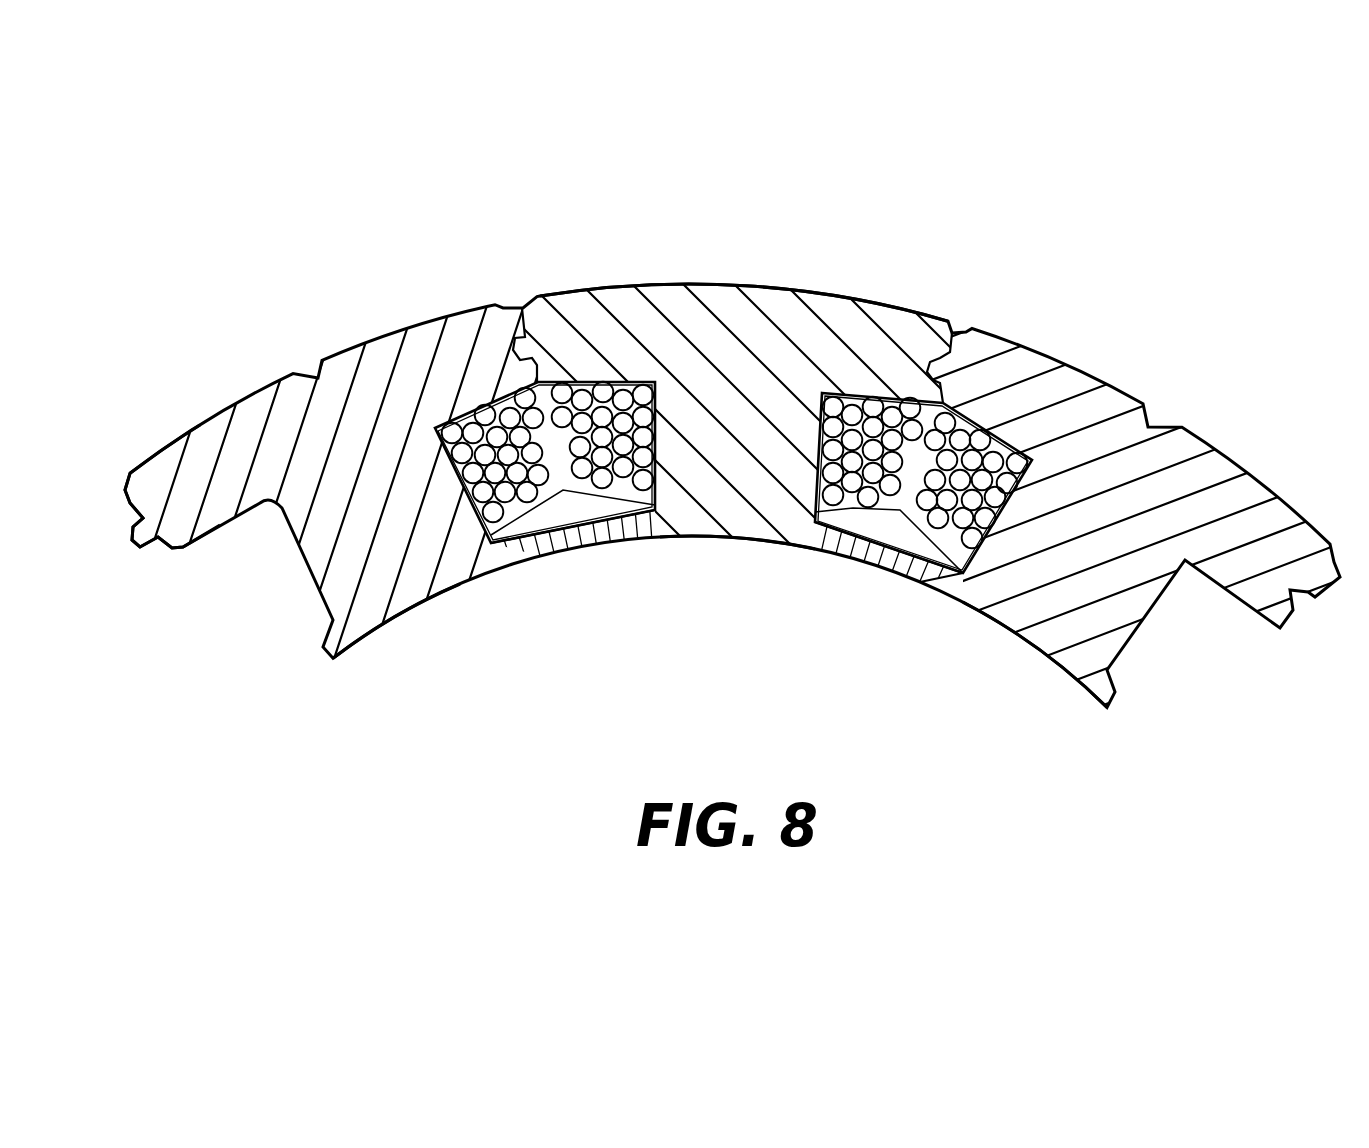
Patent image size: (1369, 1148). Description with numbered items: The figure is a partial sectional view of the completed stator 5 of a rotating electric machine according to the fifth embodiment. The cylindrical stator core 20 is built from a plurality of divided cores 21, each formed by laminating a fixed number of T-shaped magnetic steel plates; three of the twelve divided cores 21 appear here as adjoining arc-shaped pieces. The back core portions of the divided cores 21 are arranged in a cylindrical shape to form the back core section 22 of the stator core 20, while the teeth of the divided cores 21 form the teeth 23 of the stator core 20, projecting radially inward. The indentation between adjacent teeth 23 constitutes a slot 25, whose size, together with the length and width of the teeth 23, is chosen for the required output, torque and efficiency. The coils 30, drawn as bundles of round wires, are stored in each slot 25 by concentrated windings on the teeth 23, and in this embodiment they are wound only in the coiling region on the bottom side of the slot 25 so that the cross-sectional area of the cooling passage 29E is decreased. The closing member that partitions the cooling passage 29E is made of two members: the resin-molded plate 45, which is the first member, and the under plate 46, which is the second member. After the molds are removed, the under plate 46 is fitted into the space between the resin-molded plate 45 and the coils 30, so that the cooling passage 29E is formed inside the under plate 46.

The stator 5 is at (862, 290).
The stator core 20 is at (707, 282).
The divided core 21 is at (257, 388).
The back core section 22 is at (182, 457).
The teeth 23 is at (407, 583).
The slot 25 is at (488, 415).
The cooling passage 29E is at (557, 442).
The coils 30 is at (487, 417).
The resin-molded plate 45 is at (612, 525).
The under plate 46 is at (570, 530).